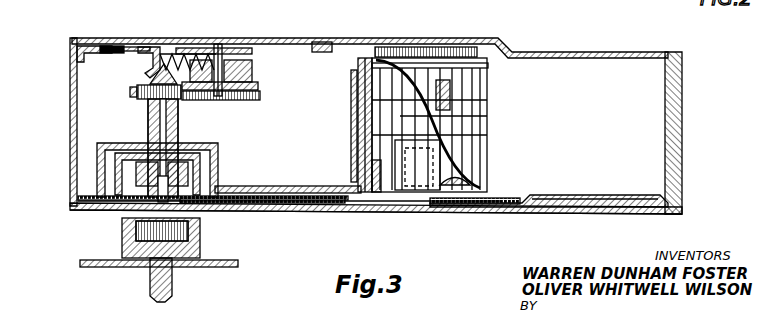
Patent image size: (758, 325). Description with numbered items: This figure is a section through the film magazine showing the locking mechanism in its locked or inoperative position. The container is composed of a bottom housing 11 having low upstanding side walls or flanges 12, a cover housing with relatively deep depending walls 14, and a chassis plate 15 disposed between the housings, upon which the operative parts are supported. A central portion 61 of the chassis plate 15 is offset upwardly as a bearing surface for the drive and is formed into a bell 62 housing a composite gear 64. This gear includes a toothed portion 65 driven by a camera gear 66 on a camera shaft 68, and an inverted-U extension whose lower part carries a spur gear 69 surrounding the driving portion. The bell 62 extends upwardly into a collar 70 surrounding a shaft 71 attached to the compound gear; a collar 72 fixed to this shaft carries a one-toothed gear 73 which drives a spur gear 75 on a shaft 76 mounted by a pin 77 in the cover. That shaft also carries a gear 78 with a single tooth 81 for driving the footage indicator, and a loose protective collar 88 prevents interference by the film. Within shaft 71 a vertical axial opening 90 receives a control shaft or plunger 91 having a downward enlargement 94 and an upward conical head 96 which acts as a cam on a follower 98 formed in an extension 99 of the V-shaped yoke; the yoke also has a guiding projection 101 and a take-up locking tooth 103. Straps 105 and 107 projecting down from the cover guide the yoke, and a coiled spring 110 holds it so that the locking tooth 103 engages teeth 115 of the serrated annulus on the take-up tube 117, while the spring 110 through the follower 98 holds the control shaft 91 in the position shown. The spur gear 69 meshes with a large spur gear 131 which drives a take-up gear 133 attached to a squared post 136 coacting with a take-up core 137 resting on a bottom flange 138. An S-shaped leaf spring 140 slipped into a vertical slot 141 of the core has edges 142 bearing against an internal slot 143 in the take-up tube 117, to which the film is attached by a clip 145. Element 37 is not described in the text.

The bottom housing 11 is at (628, 216).
The side walls or flanges 12 is at (683, 200).
The depending walls 14 is at (682, 108).
The chassis plate 15 is at (590, 202).
The mounting plate 37 is at (90, 268).
The central portion 61 is at (305, 197).
The bell 62 is at (100, 157).
The composite gear 64 is at (110, 173).
The toothed portion 65 is at (215, 166).
The camera gear 66 is at (123, 231).
The camera shaft 68 is at (173, 288).
The spur gear 69 is at (233, 208).
The collar 70 is at (178, 142).
The shaft 71 is at (178, 123).
The collar 72 is at (148, 123).
The one-toothed gear 73 is at (137, 93).
The spur gear 75 is at (356, 100).
The shaft 76 is at (360, 100).
The pin 77 is at (219, 44).
The gear 78 is at (232, 47).
The single tooth 81 is at (240, 47).
The protective collar 88 is at (255, 66).
The vertical axial opening 90 is at (222, 183).
The control shaft or plunger 91 is at (148, 132).
The downward enlargement 94 is at (212, 208).
The conical head 96 is at (150, 80).
The follower 98 is at (152, 69).
The extension 99 is at (132, 46).
The guiding projection 101 is at (108, 46).
The take-up locking tooth 103 is at (372, 38).
The strap 105 is at (322, 41).
The strap 107 is at (86, 49).
The coiled spring 110 is at (177, 54).
The teeth 115 is at (418, 47).
The take-up tube 117 is at (488, 65).
The spur gear 131 is at (338, 208).
The take-up gear 133 is at (466, 207).
The squared supporting portion or post 136 is at (455, 158).
The take-up core 137 is at (370, 172).
The bottom flange 138 is at (470, 182).
The S-shaped leaf spring 140 is at (390, 112).
The vertical slot 141 is at (400, 116).
The edges 142 is at (260, 97).
The internal slot 143 is at (450, 82).
The clip 145 is at (351, 155).